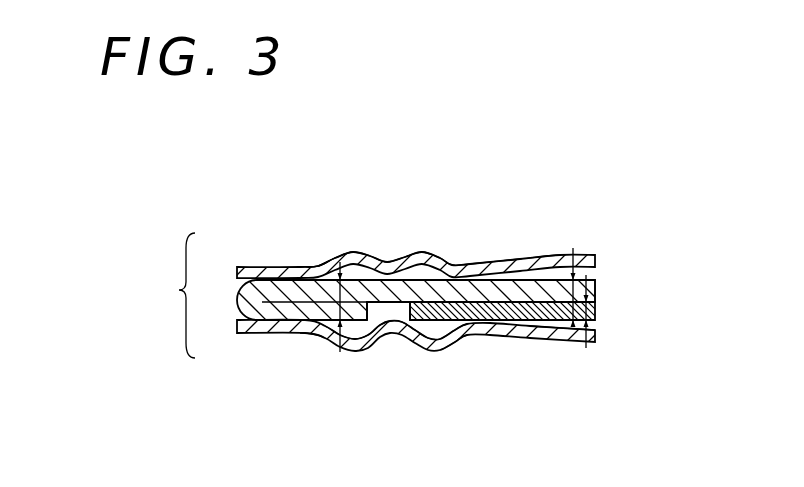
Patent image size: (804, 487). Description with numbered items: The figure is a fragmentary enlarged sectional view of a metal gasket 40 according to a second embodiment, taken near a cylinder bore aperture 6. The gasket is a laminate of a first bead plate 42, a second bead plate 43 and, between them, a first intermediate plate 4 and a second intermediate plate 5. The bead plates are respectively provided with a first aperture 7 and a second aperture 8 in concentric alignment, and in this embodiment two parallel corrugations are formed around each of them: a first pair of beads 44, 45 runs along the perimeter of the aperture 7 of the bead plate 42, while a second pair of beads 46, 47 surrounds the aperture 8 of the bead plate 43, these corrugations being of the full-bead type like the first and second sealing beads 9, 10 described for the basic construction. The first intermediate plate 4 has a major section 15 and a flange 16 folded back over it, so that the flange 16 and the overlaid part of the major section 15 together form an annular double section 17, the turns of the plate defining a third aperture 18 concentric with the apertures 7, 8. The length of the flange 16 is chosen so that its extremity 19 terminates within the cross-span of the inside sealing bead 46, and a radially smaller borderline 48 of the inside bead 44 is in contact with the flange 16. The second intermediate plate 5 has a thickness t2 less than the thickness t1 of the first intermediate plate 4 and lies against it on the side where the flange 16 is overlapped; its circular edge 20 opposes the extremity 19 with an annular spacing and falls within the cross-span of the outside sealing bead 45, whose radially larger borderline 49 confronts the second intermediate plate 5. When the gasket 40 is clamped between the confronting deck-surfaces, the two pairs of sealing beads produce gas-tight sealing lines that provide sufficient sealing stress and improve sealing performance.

The first intermediate plate 4 is at (546, 292).
The second intermediate plate 5 is at (561, 332).
The cylinder bore aperture 6 is at (170, 295).
The first aperture 7 is at (238, 328).
The second aperture 8 is at (238, 273).
The first sealing bead 9 is at (327, 267).
The second sealing bead 10 is at (322, 316).
The major section 15 is at (461, 298).
The flange 16 is at (302, 324).
The annular double section 17 is at (275, 302).
The third aperture 18 is at (239, 300).
The extremity 19 is at (375, 333).
The circular edge 20 is at (404, 303).
The metal gasket 40 is at (524, 244).
The first bead plate 42 is at (452, 342).
The second bead plate 43 is at (450, 265).
The inside bead 44 is at (351, 343).
The outside bead 45 is at (426, 343).
The sealing bead 46 is at (355, 253).
The sealing bead 47 is at (421, 253).
The radially smaller borderline 48 is at (312, 335).
The radially larger borderline 49 is at (455, 352).
The thickness of first intermediate plate t1 is at (576, 256).
The thickness of second intermediate plate t2 is at (589, 312).